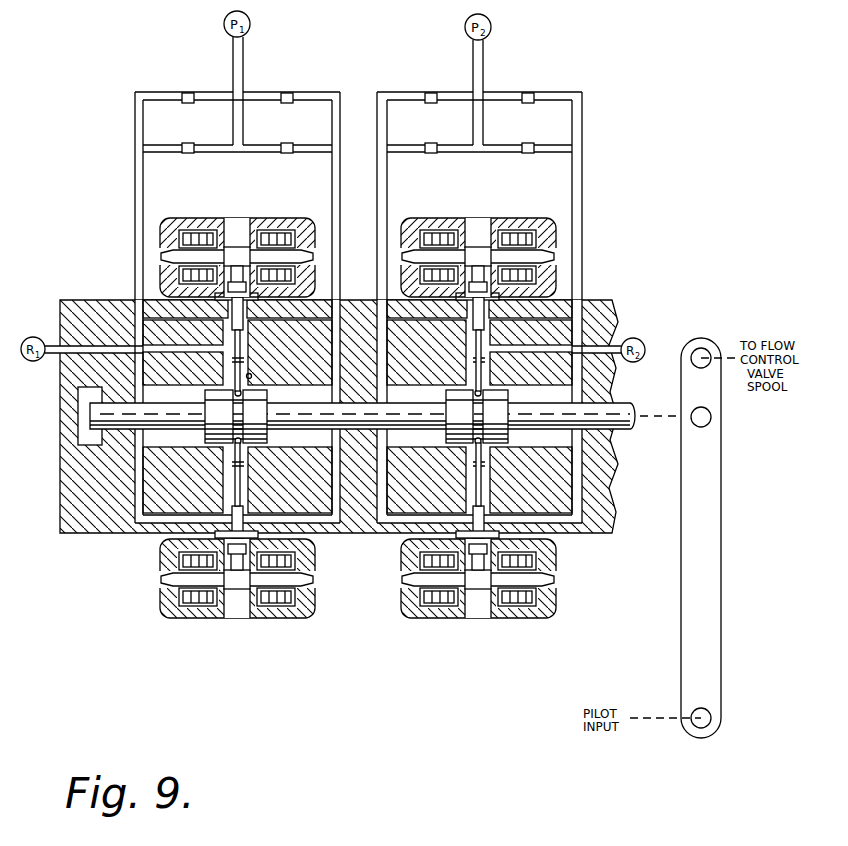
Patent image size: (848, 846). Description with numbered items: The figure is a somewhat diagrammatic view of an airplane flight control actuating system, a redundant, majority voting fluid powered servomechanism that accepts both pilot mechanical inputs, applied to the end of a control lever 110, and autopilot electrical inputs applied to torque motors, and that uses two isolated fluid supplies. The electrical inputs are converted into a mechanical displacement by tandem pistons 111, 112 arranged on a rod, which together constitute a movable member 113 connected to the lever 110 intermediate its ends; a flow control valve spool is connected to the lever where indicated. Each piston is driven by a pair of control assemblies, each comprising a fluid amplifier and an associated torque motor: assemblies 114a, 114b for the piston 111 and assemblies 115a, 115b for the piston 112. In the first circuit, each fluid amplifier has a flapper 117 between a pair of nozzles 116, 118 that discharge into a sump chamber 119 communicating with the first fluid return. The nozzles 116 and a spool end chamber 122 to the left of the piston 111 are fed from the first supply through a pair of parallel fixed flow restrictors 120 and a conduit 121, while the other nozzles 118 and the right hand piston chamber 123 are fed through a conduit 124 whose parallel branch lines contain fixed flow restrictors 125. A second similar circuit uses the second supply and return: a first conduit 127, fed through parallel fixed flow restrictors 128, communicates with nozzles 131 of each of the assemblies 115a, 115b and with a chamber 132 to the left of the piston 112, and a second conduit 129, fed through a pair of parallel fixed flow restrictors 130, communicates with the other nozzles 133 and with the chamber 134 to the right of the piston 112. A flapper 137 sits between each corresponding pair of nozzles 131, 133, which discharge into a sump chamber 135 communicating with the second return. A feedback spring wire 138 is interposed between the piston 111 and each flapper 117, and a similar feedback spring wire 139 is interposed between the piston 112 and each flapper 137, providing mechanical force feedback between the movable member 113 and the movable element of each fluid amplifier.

The control lever 110 is at (711, 612).
The tandem piston 111 is at (268, 394).
The tandem piston 112 is at (508, 394).
The movable member 113 is at (624, 401).
The control assembly 114a is at (182, 217).
The control assembly 114b is at (209, 621).
The control assembly 115a is at (462, 217).
The control assembly 115b is at (464, 621).
The nozzle 116 is at (231, 338).
The flapper 117 is at (250, 345).
The nozzle 118 is at (252, 320).
The sump chamber 119 is at (253, 378).
The fixed flow restrictor 120 is at (188, 105).
The conduit 121 is at (135, 202).
The spool end chamber 122 is at (183, 450).
The right hand piston chamber 123 is at (290, 473).
The conduit 124 is at (334, 190).
The fixed flow restrictor 125 is at (287, 105).
The conduit 127 is at (380, 190).
The fixed flow restrictor 128 is at (431, 105).
The conduit 129 is at (582, 194).
The fixed flow restrictor 130 is at (528, 105).
The nozzle 131 is at (466, 318).
The chamber 132 is at (426, 450).
The nozzle 133 is at (491, 323).
The chamber 134 is at (531, 474).
The sump chamber 135 is at (468, 378).
The flapper 137 is at (467, 360).
The feedback spring wire 138 is at (248, 361).
The feedback spring wire 139 is at (492, 366).